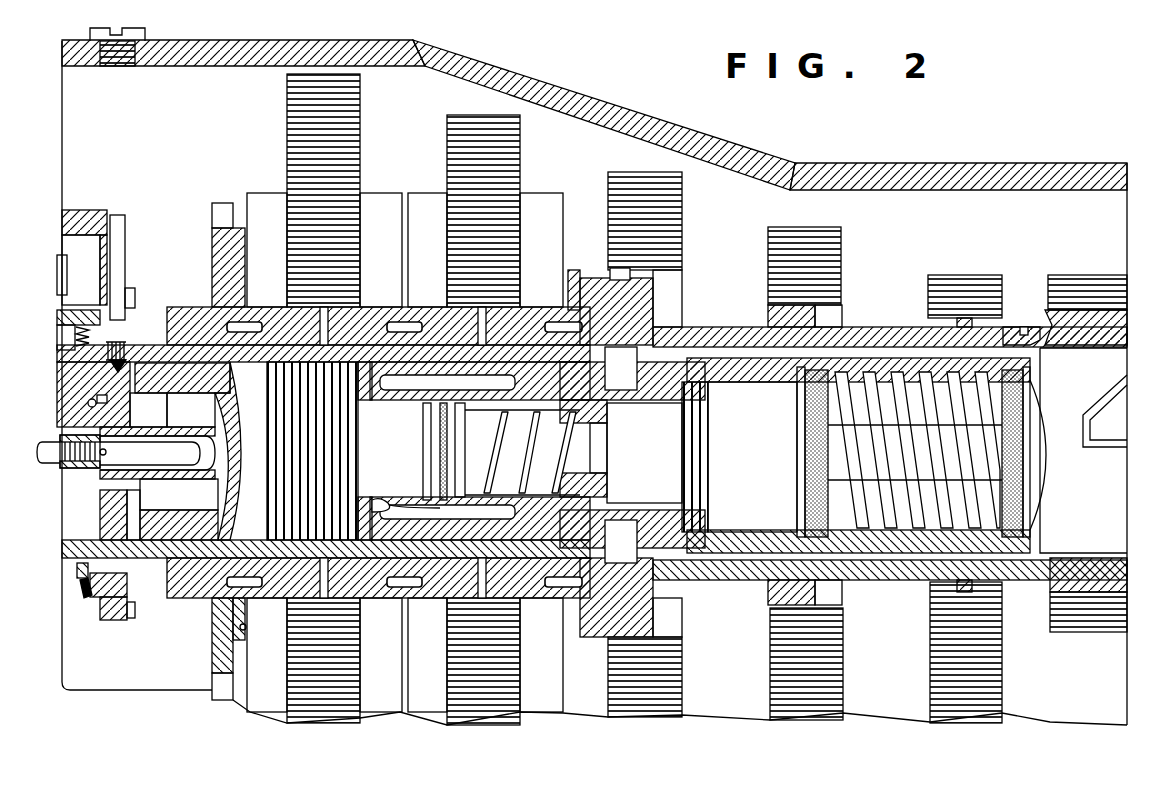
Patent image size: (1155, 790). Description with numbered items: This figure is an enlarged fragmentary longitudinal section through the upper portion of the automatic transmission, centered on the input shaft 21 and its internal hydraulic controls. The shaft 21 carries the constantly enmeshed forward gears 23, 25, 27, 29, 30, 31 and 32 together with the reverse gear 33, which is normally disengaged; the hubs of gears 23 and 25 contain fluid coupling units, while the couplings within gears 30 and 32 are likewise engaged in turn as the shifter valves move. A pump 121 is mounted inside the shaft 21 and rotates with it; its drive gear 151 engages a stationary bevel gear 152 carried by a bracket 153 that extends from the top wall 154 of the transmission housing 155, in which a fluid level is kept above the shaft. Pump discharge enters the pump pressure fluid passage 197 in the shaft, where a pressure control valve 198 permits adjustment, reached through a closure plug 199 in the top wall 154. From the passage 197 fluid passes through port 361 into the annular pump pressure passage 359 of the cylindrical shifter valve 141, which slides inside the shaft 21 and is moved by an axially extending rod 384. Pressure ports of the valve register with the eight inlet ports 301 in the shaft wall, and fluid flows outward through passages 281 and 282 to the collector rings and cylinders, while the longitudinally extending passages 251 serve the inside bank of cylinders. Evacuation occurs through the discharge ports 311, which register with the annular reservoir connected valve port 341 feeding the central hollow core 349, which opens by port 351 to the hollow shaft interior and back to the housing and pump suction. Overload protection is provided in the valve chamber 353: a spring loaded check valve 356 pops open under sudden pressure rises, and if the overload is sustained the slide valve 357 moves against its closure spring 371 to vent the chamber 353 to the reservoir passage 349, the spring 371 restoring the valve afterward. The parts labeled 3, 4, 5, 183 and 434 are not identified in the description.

The end cover 3 is at (1097, 342).
The end ring 4 is at (1045, 325).
The locking tab 5 is at (1030, 340).
The input shaft 21 is at (58, 553).
The gear 23 is at (287, 140).
The gear 25 is at (447, 155).
The gear 27 is at (682, 212).
The gear 29 is at (840, 242).
The gear 30 is at (840, 703).
The gear 31 is at (977, 250).
The gear 32 is at (1000, 685).
The reverse gear 33 is at (1090, 275).
The pump 121 is at (70, 412).
The shifter valve 141 is at (610, 405).
The drive gear 151 is at (80, 307).
The stationary bevel gear 152 is at (85, 587).
The bracket 153 is at (78, 210).
The top wall 154 is at (335, 42).
The transmission housing 155 is at (545, 72).
The mounting flange 183 is at (212, 692).
The pump pressure fluid passage 197 is at (100, 398).
The pressure control valve 198 is at (132, 353).
The closure plug 199 is at (120, 62).
The longitudinally extending passages 251 is at (445, 345).
The longitudinally extending passage 281 is at (502, 515).
The longitudinally extending passage 282 is at (512, 370).
The inlet ports 301 is at (380, 500).
The discharge ports 311 is at (376, 355).
The annular reservoir connected valve port 341 is at (220, 385).
The central hollow core 349 is at (157, 453).
The port 351 is at (108, 452).
The valve chamber 353 is at (413, 418).
The spring loaded check valve 356 is at (392, 415).
The spring loaded slide valve 357 is at (460, 430).
The annular pump pressure fluid passage 359 is at (191, 410).
The port 361 is at (134, 392).
The closure spring 371 is at (535, 440).
The axially extending rod 384 is at (53, 453).
The helical screw 434 is at (933, 520).